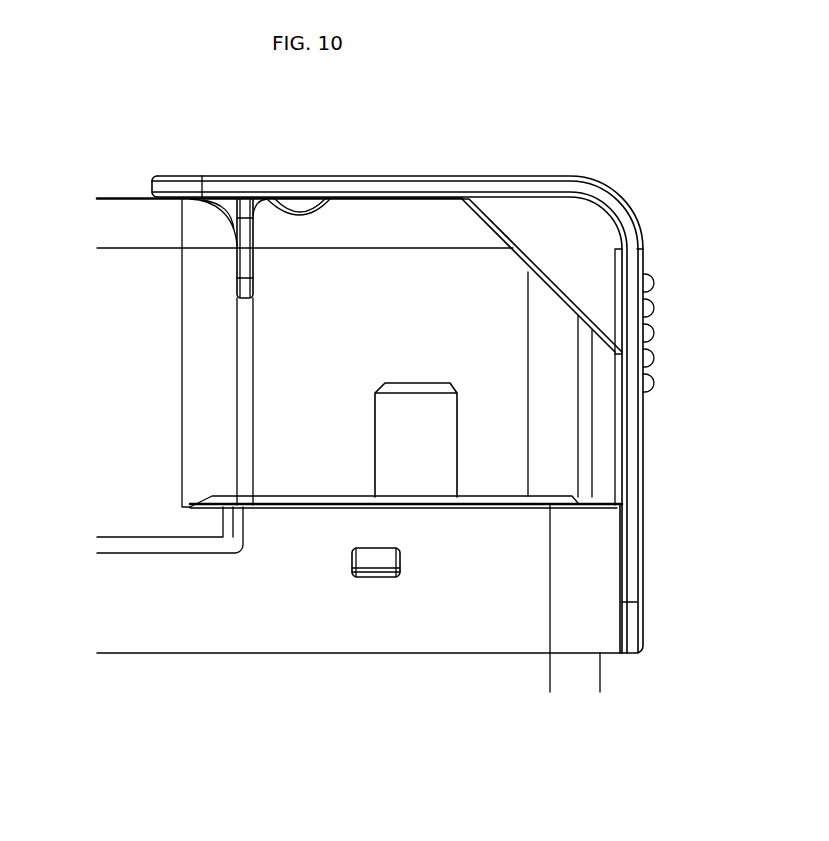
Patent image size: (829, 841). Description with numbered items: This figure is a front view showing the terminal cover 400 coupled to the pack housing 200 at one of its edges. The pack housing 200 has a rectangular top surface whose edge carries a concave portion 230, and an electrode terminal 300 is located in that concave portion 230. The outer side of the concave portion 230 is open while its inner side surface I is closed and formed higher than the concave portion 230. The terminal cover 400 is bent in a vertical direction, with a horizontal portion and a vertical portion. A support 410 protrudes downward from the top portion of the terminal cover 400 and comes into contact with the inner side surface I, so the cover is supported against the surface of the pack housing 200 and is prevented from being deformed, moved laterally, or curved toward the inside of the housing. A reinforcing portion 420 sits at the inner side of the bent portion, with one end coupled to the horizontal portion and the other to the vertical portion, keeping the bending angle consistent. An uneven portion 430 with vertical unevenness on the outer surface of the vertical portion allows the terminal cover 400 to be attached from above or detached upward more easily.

The pack housing 200 is at (465, 630).
The concave portion 230 is at (385, 268).
The electrode terminal 300 is at (423, 403).
The terminal cover 400 is at (651, 172).
The support 410 is at (245, 265).
The reinforcing portion 420 is at (543, 248).
The uneven portion 430 is at (650, 331).
The inner side surface I is at (257, 353).